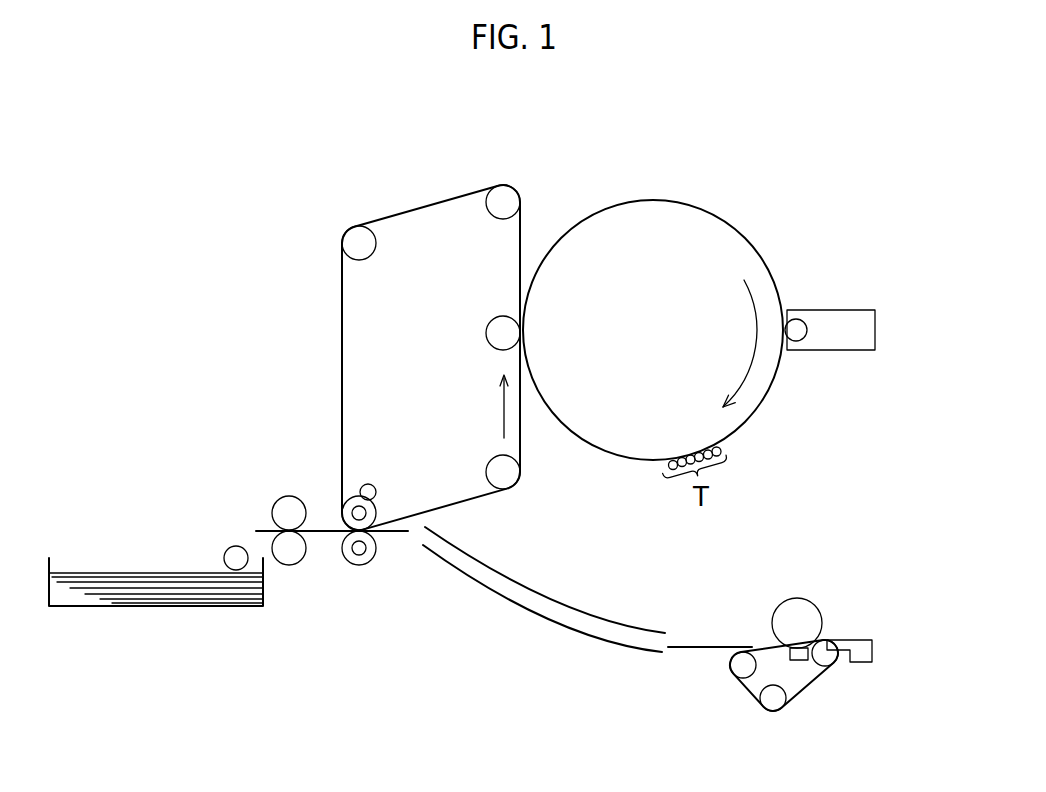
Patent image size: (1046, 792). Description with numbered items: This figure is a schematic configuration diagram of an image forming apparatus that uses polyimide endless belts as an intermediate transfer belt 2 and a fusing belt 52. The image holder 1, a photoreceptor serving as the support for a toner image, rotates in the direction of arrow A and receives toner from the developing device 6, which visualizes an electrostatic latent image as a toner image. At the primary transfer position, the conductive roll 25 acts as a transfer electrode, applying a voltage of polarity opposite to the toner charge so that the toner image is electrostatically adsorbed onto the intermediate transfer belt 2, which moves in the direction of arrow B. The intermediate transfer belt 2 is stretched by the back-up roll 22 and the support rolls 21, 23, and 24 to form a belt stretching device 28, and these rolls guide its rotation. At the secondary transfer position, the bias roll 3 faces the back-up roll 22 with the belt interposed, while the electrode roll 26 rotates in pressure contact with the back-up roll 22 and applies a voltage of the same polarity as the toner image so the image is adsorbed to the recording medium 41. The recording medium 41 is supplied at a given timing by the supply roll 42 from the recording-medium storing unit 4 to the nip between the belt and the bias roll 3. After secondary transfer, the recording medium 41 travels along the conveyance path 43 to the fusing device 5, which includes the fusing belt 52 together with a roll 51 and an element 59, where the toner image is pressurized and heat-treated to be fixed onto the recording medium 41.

The image holder 1 is at (653, 198).
The intermediate transfer belt 2 is at (342, 353).
The bias roll 3 is at (359, 566).
The recording-medium storing unit 4 is at (85, 607).
The fusing device 5 is at (841, 634).
The developing device 6 is at (875, 330).
The support roll 21 is at (493, 218).
The back-up roll 22 is at (354, 497).
The support roll 23 is at (376, 248).
The support roll 24 is at (491, 460).
The conductive roll 25 is at (486, 333).
The electrode roll 26 is at (374, 487).
The belt stretching device 28 is at (375, 357).
The recording medium 41 is at (123, 572).
The supply roll 42 is at (236, 546).
The conveyance path 43 is at (592, 643).
The heating roller 51 is at (822, 618).
The fusing belt 52 is at (810, 680).
The pressure pad 59 is at (872, 648).